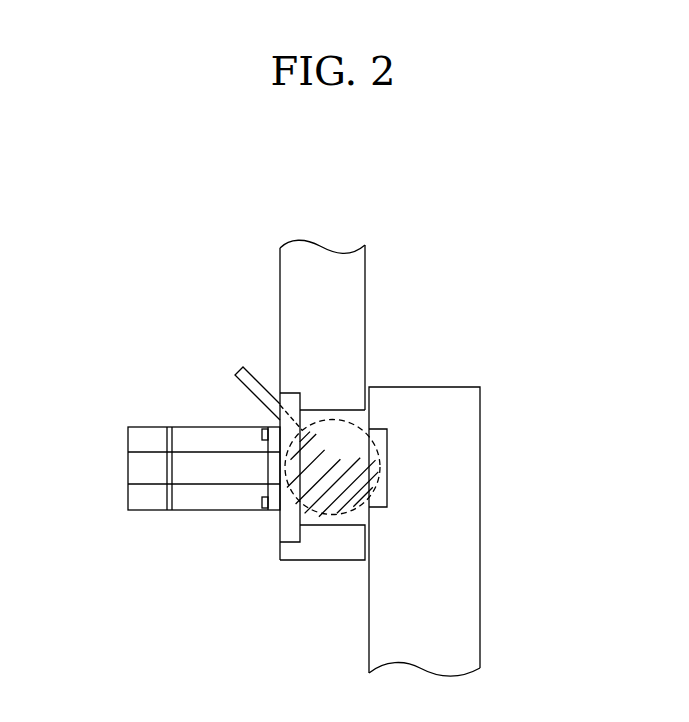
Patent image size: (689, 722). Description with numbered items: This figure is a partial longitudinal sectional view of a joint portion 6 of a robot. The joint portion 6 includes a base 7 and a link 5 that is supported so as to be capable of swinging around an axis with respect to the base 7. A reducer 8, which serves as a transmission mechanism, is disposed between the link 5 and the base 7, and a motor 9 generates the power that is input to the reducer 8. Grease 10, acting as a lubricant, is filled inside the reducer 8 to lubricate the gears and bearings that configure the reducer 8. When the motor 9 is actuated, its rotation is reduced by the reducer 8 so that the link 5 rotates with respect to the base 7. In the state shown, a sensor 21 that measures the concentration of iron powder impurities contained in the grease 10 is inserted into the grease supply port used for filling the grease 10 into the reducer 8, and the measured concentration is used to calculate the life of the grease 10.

The link 5 is at (280, 298).
The joint portion 6 is at (478, 310).
The base 7 is at (481, 522).
The reducer 8 is at (324, 548).
The motor 9 is at (128, 465).
The grease 10 is at (312, 425).
The sensor 21 is at (238, 371).